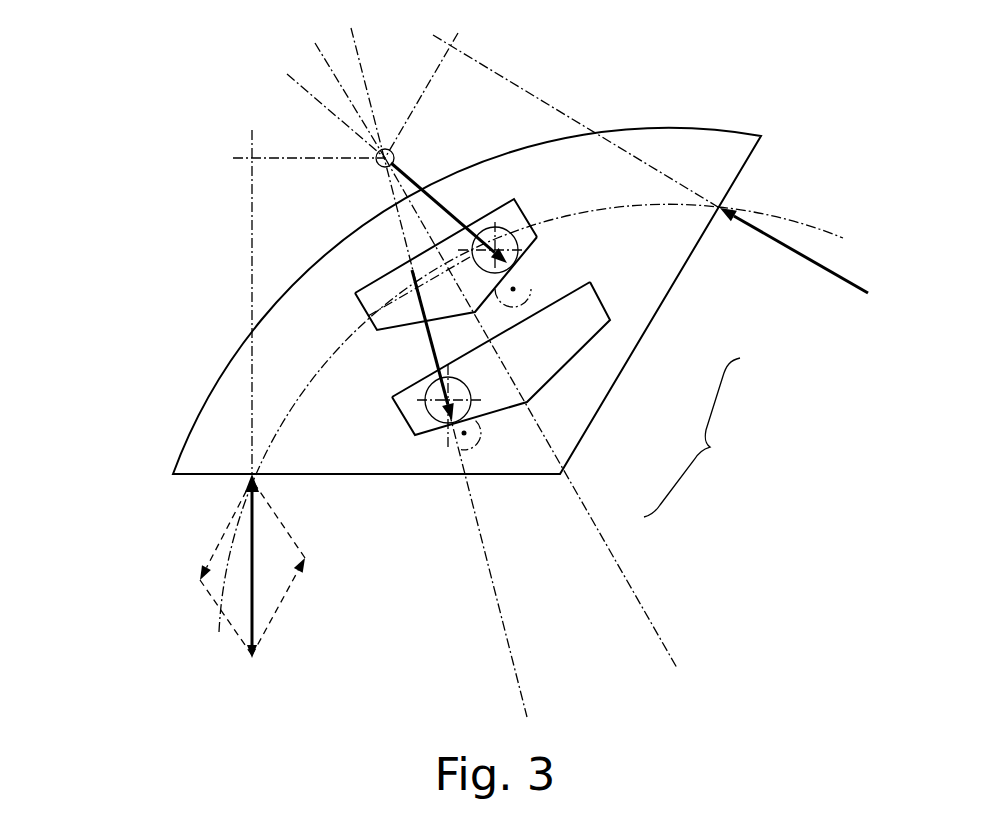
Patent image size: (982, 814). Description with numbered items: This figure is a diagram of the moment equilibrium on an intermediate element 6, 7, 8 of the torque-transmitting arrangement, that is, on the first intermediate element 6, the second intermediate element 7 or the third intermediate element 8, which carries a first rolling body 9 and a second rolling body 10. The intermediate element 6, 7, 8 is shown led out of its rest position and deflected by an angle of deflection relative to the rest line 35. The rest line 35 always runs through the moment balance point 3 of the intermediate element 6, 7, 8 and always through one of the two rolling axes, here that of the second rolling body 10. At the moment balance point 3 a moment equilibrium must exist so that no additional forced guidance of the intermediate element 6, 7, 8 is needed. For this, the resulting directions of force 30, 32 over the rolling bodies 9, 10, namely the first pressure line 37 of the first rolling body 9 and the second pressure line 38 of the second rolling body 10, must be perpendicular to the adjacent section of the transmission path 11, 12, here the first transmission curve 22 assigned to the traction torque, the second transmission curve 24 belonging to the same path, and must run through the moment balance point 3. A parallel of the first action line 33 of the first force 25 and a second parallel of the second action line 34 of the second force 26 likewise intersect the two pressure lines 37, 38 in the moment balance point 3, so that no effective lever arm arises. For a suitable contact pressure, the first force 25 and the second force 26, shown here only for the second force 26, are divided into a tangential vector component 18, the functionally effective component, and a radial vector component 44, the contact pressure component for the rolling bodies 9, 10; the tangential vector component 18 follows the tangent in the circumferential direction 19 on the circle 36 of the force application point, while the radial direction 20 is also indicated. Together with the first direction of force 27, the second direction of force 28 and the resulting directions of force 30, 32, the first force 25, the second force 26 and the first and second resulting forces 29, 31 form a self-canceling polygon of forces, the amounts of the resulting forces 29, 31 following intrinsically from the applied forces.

The moment balance point 3 is at (387, 149).
The first intermediate element 6 is at (406, 314).
The second intermediate element 7 is at (406, 314).
The third intermediate element 8 is at (180, 453).
The first rolling body 9 is at (378, 210).
The second rolling body 10 is at (544, 403).
The first transmission path 11 is at (718, 437).
The second transmission path 12 is at (718, 437).
The tangential vector component 18 is at (292, 583).
The circumferential direction 19 is at (815, 227).
The radial direction 20 is at (645, 612).
The first transmission curve 22 is at (520, 252).
The second transmission curve 24 is at (457, 316).
The first force 25 is at (794, 277).
The second force 26 is at (258, 630).
The first direction of force 27 is at (835, 276).
The second direction of force 28 is at (253, 302).
The first resulting force 29 is at (326, 301).
The first resulting direction of force 30 is at (460, 318).
The second resulting force 31 is at (332, 246).
The second resulting direction of force 32 is at (513, 200).
The first action line 33 is at (252, 185).
The second action line 34 is at (505, 72).
The rest line 35 is at (439, 383).
The circle of the force application point 36 is at (285, 425).
The first pressure line 37 is at (515, 661).
The second pressure line 38 is at (310, 92).
The radial vector component 44 is at (234, 620).